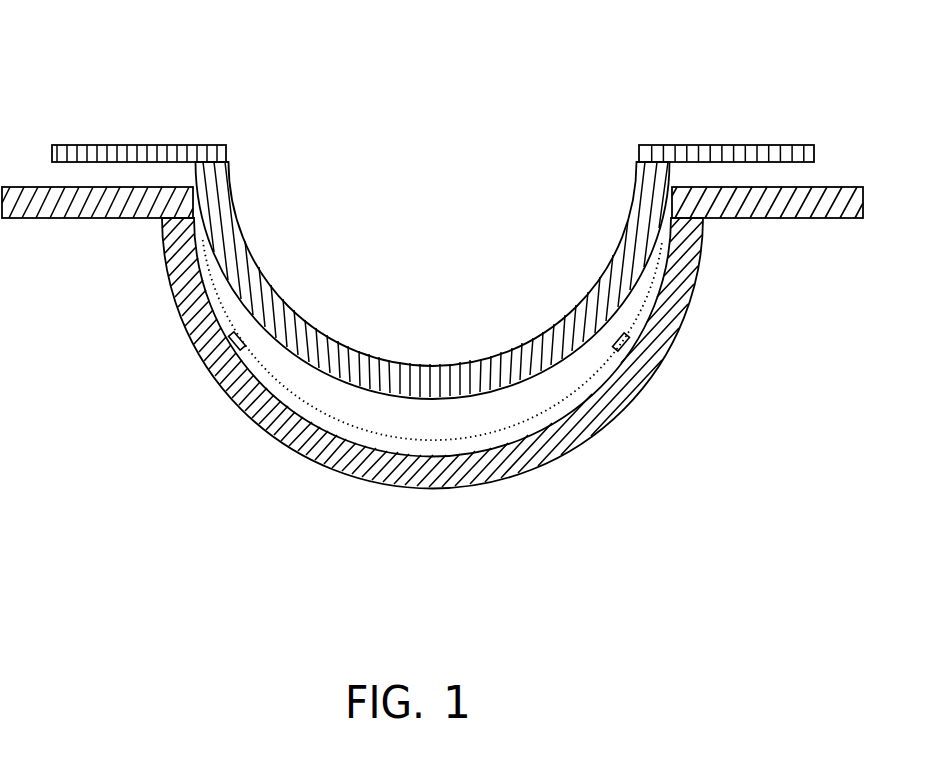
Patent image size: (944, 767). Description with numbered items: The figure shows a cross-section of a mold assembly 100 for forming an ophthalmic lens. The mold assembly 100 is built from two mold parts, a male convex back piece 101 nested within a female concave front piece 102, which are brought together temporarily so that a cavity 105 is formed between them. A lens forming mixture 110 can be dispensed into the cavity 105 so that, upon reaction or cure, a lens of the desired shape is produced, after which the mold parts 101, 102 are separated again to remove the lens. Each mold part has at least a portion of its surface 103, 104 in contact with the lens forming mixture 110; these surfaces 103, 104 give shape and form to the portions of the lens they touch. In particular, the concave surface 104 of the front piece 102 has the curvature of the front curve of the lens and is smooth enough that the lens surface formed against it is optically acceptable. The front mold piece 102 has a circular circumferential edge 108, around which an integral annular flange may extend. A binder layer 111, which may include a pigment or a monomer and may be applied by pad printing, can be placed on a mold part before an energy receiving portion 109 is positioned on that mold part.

The mold assembly 100 is at (366, 186).
The male convex piece 101 is at (622, 252).
The female concave piece 102 is at (282, 430).
The surface of mold part 103 is at (479, 393).
The concave surface 104 is at (517, 439).
The cavity 105 is at (353, 408).
The circular circumferential edge 108 is at (760, 218).
The energy receiving portion 109 is at (232, 346).
The lens forming mixture 110 is at (413, 415).
The binder layer 111 is at (465, 445).